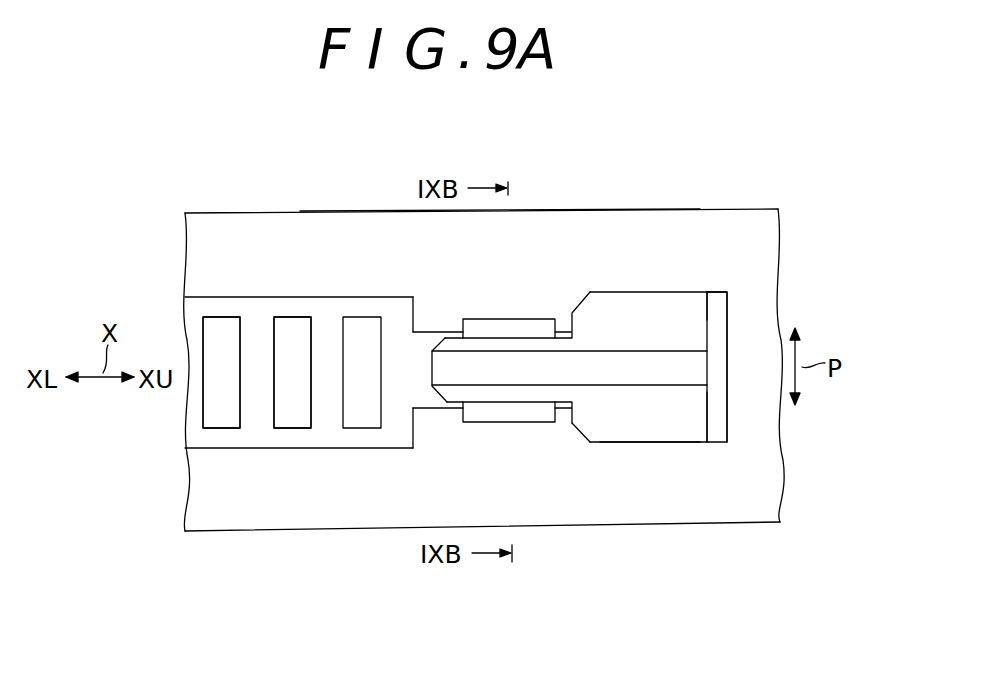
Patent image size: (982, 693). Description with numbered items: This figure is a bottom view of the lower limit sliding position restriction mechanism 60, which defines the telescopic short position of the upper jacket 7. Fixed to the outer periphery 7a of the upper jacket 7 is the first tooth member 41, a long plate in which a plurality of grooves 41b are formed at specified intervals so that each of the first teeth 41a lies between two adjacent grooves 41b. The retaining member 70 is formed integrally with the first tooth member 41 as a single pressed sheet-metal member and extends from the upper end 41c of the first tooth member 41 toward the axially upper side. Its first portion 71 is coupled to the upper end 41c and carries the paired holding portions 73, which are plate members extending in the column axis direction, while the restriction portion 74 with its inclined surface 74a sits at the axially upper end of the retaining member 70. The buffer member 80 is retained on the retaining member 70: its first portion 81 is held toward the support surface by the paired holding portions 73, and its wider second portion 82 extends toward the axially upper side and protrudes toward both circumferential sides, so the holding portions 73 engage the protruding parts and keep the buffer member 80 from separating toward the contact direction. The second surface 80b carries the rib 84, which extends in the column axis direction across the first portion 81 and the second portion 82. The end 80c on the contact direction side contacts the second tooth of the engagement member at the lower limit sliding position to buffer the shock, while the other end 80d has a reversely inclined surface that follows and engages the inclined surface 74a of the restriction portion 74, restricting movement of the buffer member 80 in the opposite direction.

The upper jacket 7 is at (707, 206).
The outer periphery 7a is at (592, 225).
The first tooth member 41 is at (346, 291).
The first teeth 41a is at (327, 330).
The grooves 41b is at (292, 417).
The upper end 41c is at (400, 318).
The lower limit sliding position restriction mechanism 60 is at (745, 280).
The retaining member 70 is at (441, 326).
The first portion 71 is at (427, 408).
The paired holding portions 73 is at (517, 323).
The restriction portion 74 is at (717, 422).
The inclined surface 74a is at (707, 410).
The buffer member 80 is at (649, 286).
The second surface 80b is at (645, 415).
The end 80c is at (431, 378).
The other end 80d is at (707, 317).
The first portion 81 is at (453, 393).
The second portion 82 is at (603, 426).
The rib 84 is at (695, 368).